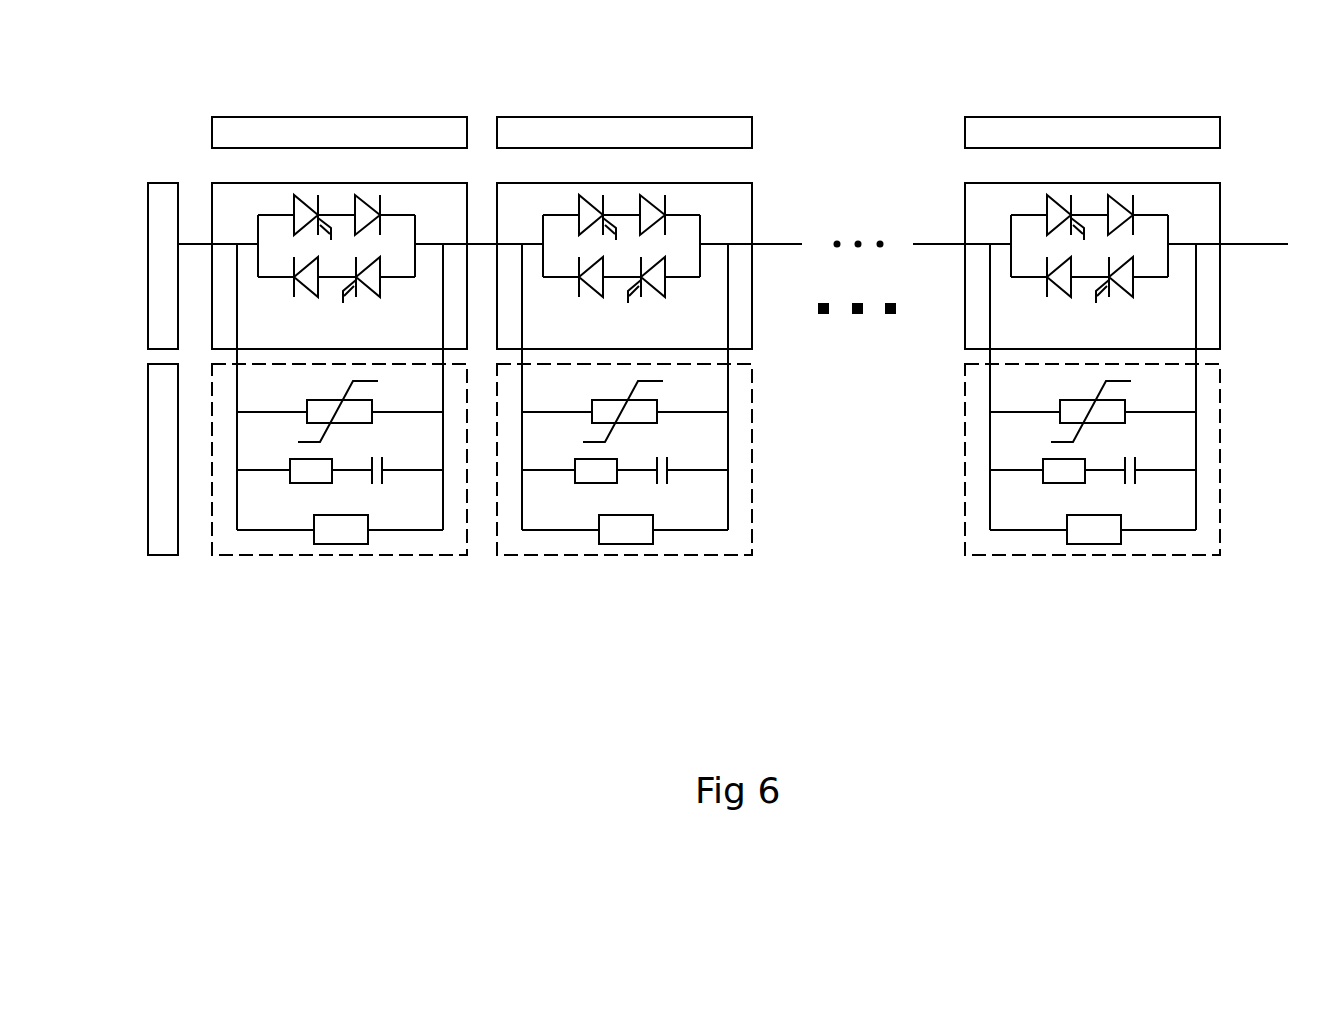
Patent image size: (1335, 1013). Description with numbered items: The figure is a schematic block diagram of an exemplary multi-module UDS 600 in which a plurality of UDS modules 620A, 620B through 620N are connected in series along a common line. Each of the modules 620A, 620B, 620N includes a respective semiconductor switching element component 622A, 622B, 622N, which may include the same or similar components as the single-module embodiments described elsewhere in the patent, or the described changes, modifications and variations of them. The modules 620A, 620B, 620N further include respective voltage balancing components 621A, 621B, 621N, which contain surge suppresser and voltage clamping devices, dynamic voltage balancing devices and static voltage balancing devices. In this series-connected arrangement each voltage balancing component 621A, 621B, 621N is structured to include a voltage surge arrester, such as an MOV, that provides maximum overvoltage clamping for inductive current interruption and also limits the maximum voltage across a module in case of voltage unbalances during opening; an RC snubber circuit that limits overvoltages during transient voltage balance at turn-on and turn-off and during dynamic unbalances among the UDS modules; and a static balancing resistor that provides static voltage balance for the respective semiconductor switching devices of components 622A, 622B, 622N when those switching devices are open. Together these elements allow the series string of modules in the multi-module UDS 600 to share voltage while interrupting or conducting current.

The multi-module UDS 600 is at (1279, 99).
The UDS module 620A is at (128, 583).
The UDS module 620B is at (676, 365).
The UDS module 620N is at (1145, 365).
The semiconductor switching element component 622A is at (288, 233).
The semiconductor switching element component 622B is at (676, 233).
The semiconductor switching element component 622N is at (1145, 233).
The voltage balancing component 621A is at (288, 473).
The voltage balancing component 621B is at (676, 473).
The voltage balancing component 621N is at (1145, 473).